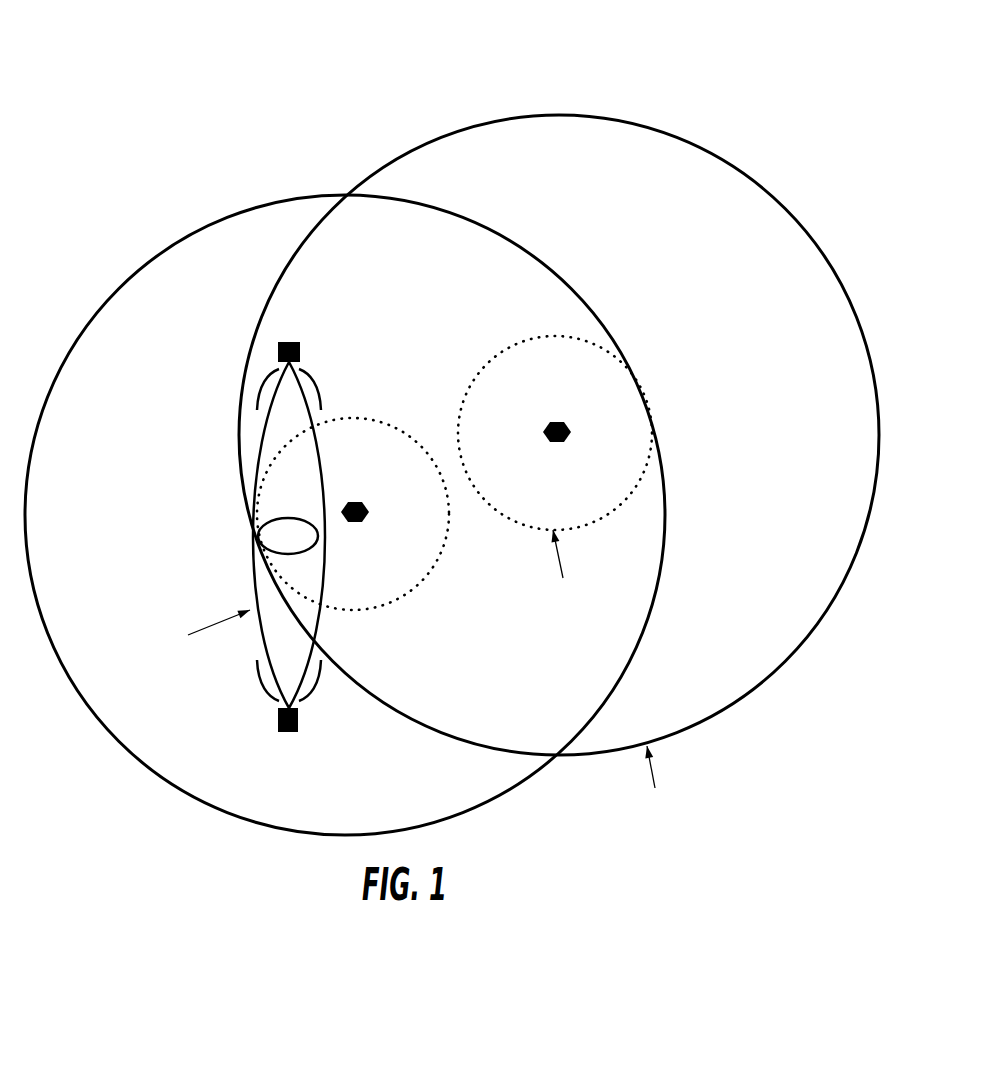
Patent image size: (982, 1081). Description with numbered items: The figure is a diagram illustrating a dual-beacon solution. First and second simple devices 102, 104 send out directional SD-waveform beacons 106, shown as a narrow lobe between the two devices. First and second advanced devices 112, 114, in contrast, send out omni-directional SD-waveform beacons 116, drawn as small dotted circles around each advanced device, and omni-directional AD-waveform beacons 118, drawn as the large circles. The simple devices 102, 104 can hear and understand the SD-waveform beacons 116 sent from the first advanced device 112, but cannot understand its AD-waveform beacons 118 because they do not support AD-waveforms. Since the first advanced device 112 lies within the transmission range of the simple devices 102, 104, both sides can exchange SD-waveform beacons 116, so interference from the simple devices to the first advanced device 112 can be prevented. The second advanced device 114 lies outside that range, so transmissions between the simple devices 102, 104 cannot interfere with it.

The first simple device SD1 102 is at (278, 720).
The second simple device SD2 104 is at (278, 352).
The directional SD-waveform beacon 106 is at (250, 482).
The first advanced device AD1 112 is at (362, 520).
The second advanced device AD2 114 is at (570, 438).
The omni-directional SD-waveform beacon 116 is at (352, 418).
The omni-directional AD-waveform beacon 118 is at (270, 203).